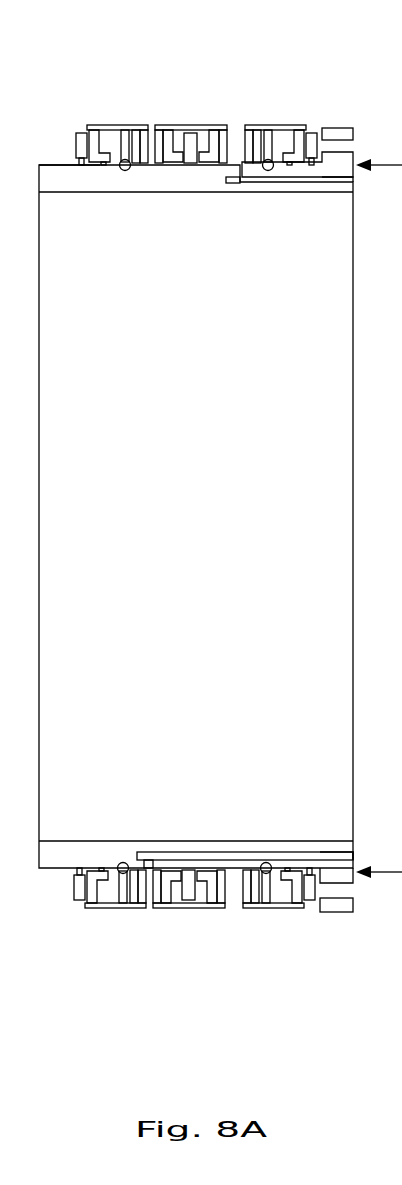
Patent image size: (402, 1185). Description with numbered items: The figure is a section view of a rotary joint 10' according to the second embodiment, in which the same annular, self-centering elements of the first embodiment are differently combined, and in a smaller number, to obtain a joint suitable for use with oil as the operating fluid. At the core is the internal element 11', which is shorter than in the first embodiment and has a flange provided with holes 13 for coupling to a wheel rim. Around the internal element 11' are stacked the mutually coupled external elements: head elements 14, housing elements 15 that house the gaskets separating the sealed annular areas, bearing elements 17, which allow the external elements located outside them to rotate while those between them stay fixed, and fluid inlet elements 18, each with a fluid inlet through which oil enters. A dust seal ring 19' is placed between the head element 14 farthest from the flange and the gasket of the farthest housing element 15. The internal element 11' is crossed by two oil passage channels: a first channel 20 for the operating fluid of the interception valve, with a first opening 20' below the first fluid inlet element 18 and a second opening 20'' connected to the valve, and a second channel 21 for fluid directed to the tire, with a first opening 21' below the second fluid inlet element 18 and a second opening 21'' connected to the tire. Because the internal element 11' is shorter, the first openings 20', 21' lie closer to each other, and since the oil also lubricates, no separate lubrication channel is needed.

The rotary joint 10' is at (207, 550).
The internal element 11' is at (196, 516).
The holes 13 is at (347, 143).
The head elements 14 is at (77, 132).
The housing elements 15 is at (97, 125).
The bearing elements 17 is at (125, 120).
The fluid inlet elements 18 is at (151, 128).
The dust seal ring 19' is at (56, 196).
The first channel 20 is at (245, 821).
The first opening of first channel 20' is at (130, 838).
The second opening of first channel 20'' is at (356, 828).
The second channel 21 is at (259, 619).
The first opening of second channel 21' is at (224, 211).
The second opening of second channel 21'' is at (362, 208).